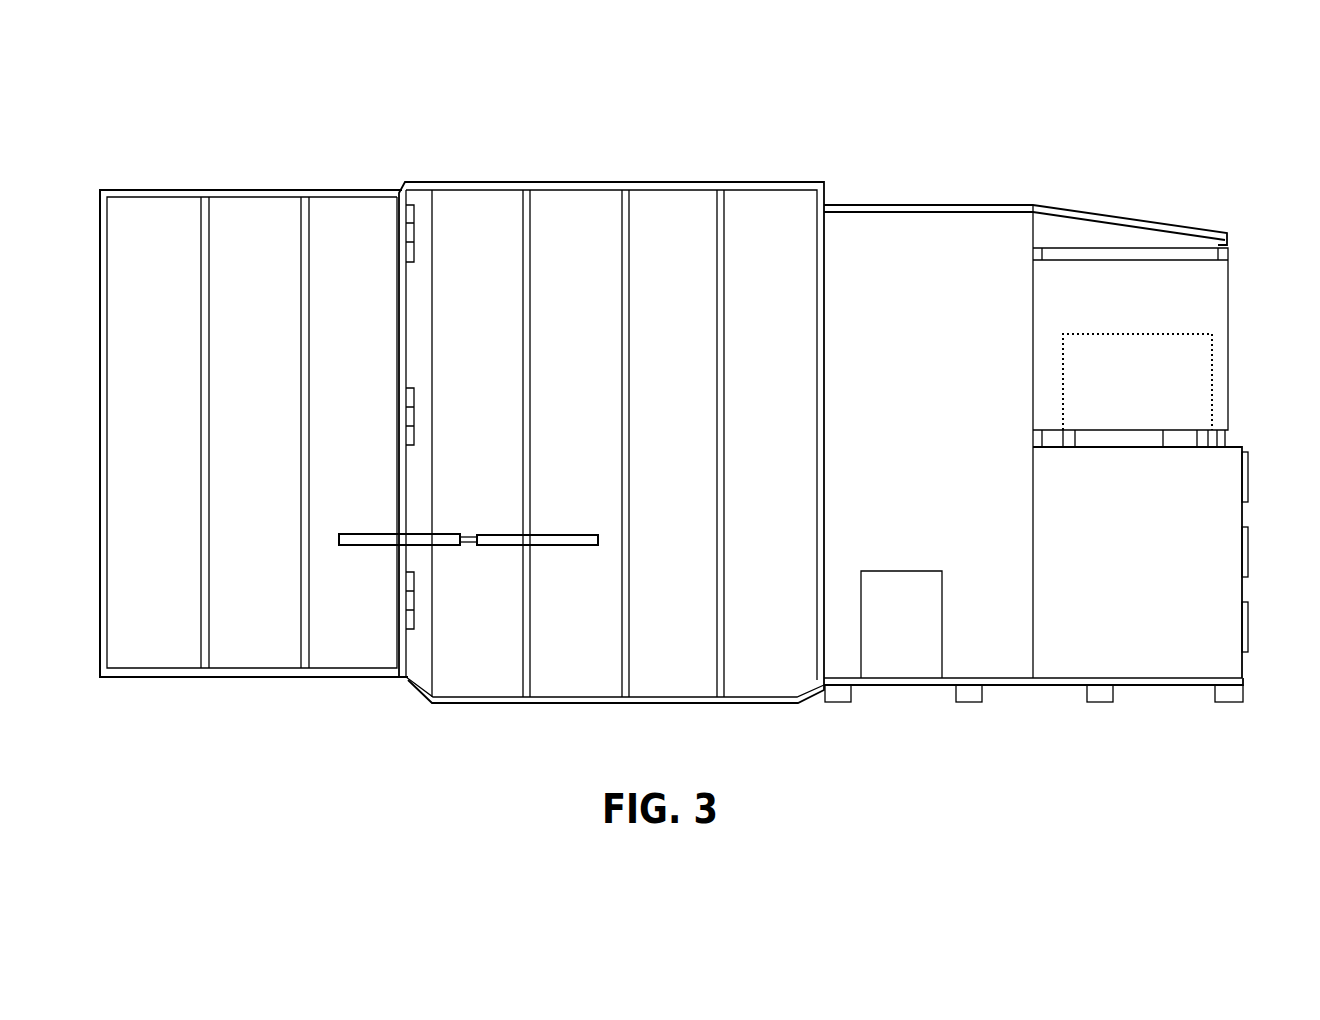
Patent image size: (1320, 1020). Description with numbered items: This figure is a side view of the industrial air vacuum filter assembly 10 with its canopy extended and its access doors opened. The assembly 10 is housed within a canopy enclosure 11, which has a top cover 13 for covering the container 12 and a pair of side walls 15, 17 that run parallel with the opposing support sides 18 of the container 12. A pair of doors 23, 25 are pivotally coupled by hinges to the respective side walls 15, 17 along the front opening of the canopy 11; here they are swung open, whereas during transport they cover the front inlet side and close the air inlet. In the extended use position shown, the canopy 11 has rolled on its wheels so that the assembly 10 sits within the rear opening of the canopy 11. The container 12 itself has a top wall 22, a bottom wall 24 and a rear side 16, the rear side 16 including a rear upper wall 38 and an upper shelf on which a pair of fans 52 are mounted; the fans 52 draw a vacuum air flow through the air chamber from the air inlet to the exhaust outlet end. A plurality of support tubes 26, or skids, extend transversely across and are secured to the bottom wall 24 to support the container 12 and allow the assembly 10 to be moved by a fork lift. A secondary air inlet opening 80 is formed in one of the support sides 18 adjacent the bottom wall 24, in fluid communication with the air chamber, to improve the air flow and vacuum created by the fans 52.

The industrial air vacuum filter assembly 10 is at (993, 100).
The canopy enclosure 11 is at (486, 183).
The container 12 is at (1033, 205).
The top cover 13 is at (678, 188).
The side wall 15 is at (600, 401).
The side wall 17 is at (468, 539).
The rear side 16 is at (1248, 478).
The support side 18 is at (952, 463).
The top wall 22 is at (915, 208).
The door 23 is at (118, 447).
The door 25 is at (252, 432).
The bottom wall 24 is at (1155, 686).
The support tubes 26 is at (970, 703).
The rear upper wall 38 is at (1034, 298).
The fans 52 is at (1198, 372).
The secondary air inlet opening 80 is at (863, 626).